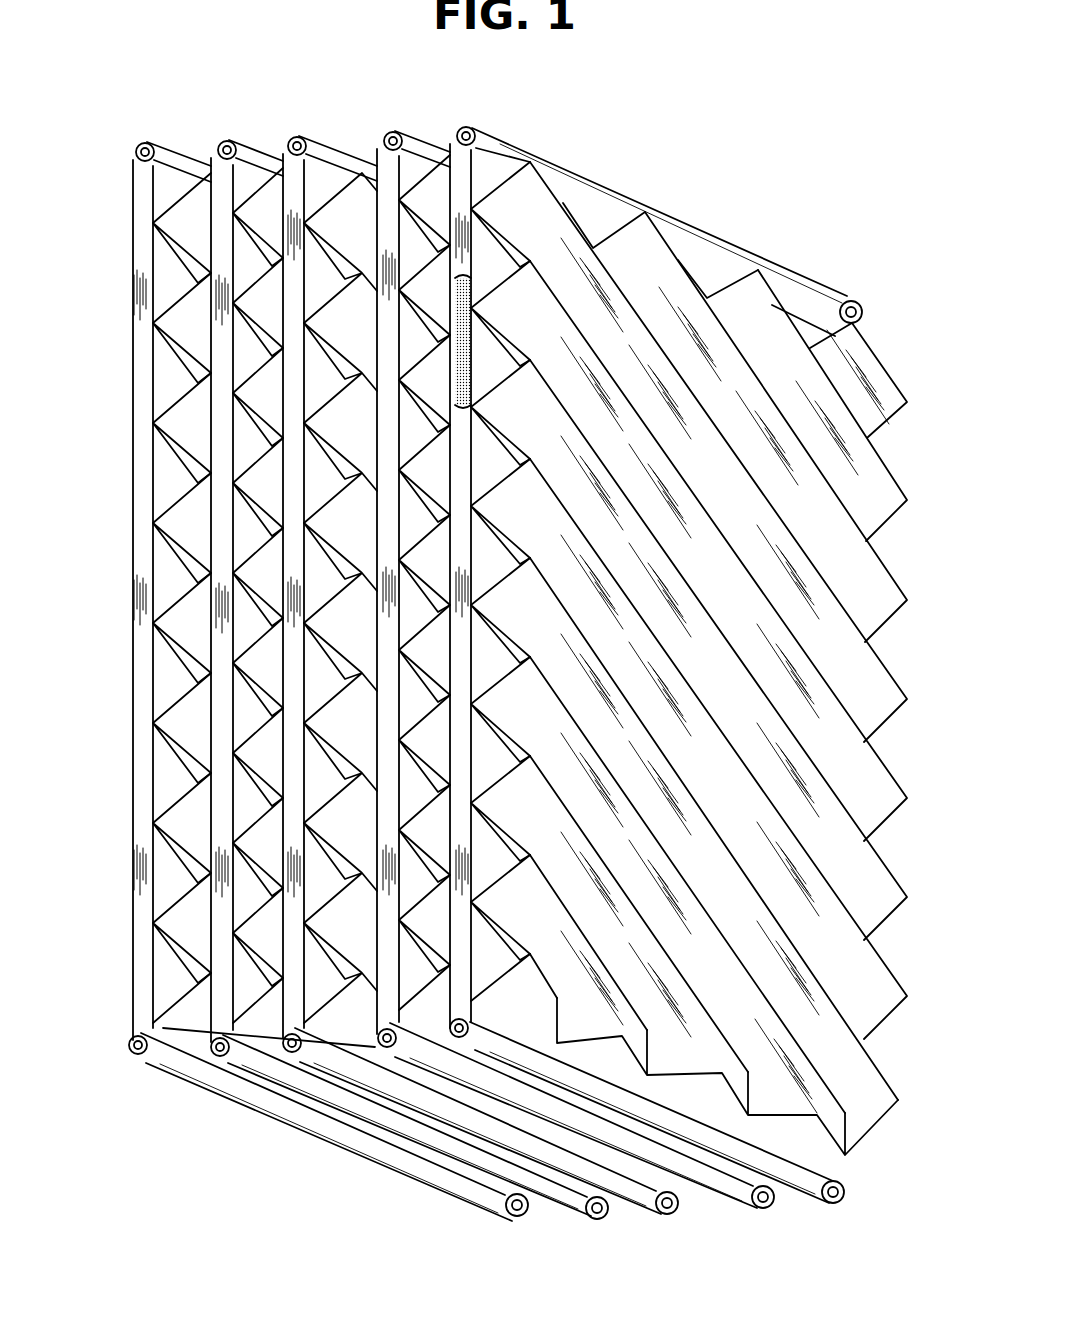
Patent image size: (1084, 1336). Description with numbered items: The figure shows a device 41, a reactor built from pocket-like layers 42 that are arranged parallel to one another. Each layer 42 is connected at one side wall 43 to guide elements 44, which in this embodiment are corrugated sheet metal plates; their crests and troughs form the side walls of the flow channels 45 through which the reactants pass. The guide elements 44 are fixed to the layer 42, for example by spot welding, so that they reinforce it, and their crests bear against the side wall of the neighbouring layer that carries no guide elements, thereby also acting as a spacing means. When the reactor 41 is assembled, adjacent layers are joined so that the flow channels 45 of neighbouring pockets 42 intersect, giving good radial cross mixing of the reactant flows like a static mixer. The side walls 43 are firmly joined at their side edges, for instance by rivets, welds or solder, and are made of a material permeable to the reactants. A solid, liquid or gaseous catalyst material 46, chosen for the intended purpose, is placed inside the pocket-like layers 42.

The device 41 is at (711, 658).
The pocket-like layer 42 is at (291, 190).
The side wall 43 is at (838, 1178).
The guide element 44 is at (887, 1075).
The flow channel 45 is at (150, 977).
The catalyst material 46 is at (473, 299).